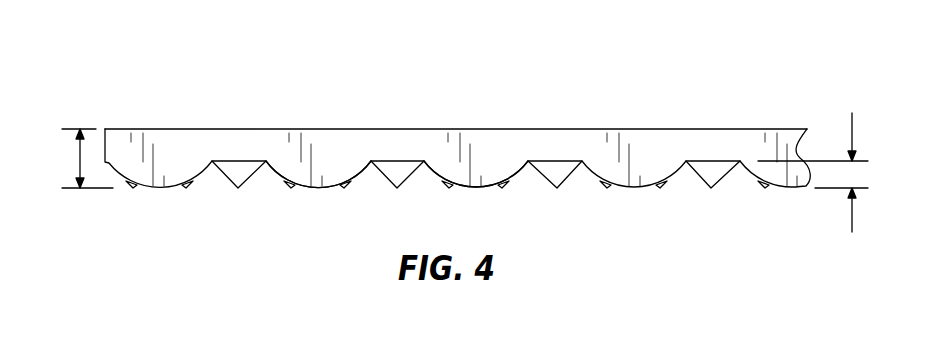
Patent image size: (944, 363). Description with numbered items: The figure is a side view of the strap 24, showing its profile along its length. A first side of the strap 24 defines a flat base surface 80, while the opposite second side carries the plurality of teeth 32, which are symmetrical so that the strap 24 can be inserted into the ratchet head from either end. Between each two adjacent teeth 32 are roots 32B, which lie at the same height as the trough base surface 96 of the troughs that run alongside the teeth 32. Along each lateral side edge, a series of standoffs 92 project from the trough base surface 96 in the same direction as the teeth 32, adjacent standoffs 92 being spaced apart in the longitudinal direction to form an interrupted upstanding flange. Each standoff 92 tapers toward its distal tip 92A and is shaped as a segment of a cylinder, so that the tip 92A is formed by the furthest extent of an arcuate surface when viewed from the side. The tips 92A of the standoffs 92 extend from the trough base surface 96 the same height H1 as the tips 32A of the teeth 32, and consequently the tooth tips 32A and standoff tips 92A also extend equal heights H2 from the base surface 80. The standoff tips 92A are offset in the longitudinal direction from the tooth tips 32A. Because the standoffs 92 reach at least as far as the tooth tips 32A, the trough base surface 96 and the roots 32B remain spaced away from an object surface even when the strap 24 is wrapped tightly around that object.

The strap 24 is at (130, 96).
The base surface 80 is at (272, 124).
The teeth 32 is at (233, 172).
The tips of the teeth 32A is at (557, 190).
The roots 32B is at (367, 171).
The standoffs 92 is at (310, 177).
The tips of the standoffs 92A is at (470, 188).
The trough base surface 96 is at (393, 168).
The height H1 is at (851, 217).
The height H2 is at (78, 163).